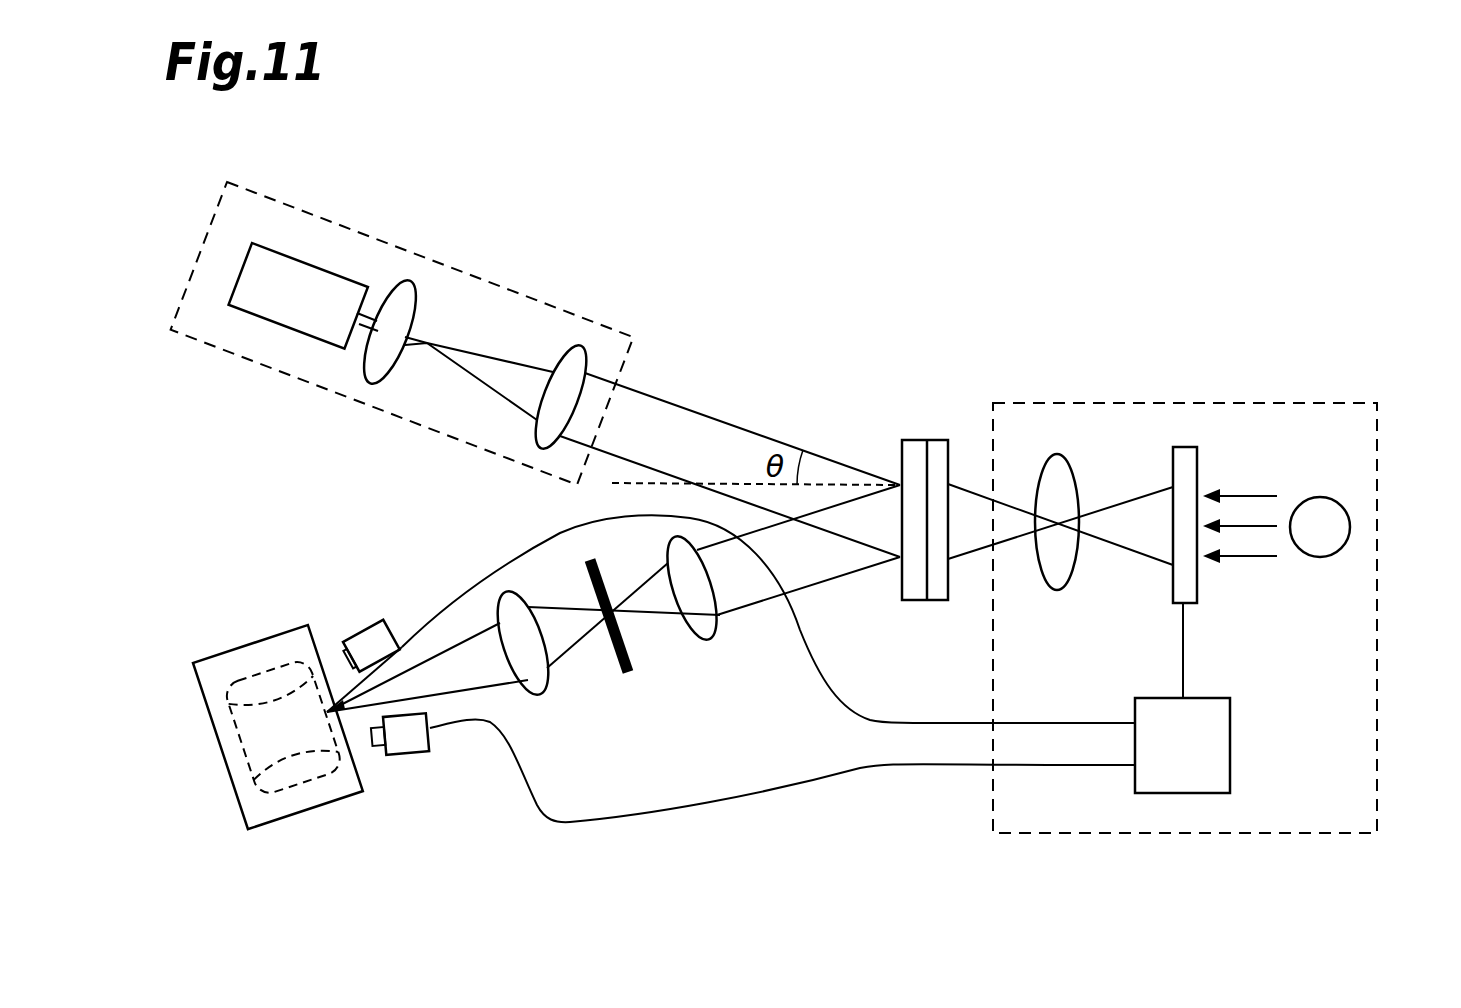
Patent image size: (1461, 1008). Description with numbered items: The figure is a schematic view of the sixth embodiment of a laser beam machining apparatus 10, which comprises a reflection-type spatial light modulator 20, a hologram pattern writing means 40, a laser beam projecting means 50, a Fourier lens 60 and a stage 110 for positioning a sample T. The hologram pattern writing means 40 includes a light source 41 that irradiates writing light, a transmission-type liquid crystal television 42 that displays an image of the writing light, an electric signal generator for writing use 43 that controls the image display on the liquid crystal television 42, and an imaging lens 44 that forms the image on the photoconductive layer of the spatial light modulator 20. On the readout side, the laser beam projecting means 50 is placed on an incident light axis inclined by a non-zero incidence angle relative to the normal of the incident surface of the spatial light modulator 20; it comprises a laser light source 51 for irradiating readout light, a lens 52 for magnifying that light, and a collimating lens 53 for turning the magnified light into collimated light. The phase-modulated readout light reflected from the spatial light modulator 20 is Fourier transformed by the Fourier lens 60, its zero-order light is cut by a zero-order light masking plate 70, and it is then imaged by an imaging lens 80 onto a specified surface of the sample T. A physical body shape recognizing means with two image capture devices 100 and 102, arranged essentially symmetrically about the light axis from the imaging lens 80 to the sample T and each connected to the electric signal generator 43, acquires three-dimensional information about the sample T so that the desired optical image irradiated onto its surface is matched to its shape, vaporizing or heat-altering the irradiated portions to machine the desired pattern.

The laser beam machining apparatus 10 is at (879, 306).
The reflection-type spatial light modulator 20 is at (925, 602).
The hologram pattern writing means 40 is at (985, 785).
The light source 41 is at (1350, 527).
The transmission-type liquid crystal television 42 is at (1198, 590).
The electric signal generator for writing use 43 is at (1172, 795).
The imaging lens 44 is at (1057, 592).
The laser beam projecting means 50 is at (518, 292).
The laser light source 51 is at (257, 318).
The lens 52 is at (360, 375).
The collimating lens 53 is at (535, 433).
The Fourier lens 60 is at (717, 635).
The zero-order light masking plate 70 is at (633, 673).
The imaging lens 80 is at (545, 692).
The image capture device 100 is at (410, 755).
The image capture device 102 is at (363, 628).
The stage 110 is at (300, 817).
The sample T is at (233, 782).